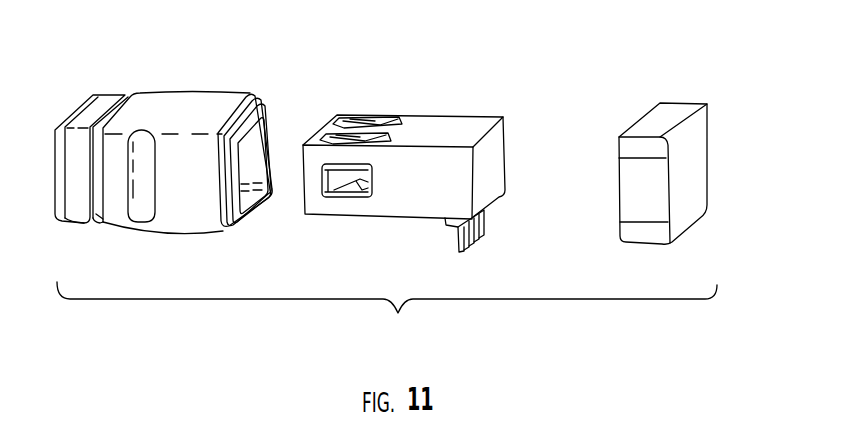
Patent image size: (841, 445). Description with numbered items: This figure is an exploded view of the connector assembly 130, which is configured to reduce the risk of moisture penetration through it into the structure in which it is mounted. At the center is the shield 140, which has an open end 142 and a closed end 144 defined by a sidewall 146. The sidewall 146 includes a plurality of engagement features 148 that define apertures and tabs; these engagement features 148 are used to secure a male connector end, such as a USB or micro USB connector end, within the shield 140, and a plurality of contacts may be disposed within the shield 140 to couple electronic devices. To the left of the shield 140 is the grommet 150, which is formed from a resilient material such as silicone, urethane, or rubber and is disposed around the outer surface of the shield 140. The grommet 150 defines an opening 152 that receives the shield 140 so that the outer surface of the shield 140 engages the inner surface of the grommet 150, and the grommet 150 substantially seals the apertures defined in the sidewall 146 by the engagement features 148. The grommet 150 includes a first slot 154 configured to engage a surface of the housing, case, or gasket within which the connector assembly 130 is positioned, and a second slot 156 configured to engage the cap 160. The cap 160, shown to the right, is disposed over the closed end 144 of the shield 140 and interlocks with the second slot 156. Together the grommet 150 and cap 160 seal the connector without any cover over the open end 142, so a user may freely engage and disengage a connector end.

The connector assembly 130 is at (387, 310).
The shield 140 is at (411, 185).
The open end 142 is at (294, 212).
The closed end 144 is at (502, 208).
The sidewall 146 is at (453, 178).
The engagement features 148 is at (375, 178).
The grommet 150 is at (240, 84).
The opening 152 is at (258, 139).
The first slot 154 is at (133, 84).
The second slot 156 is at (265, 90).
The cap 160 is at (673, 115).